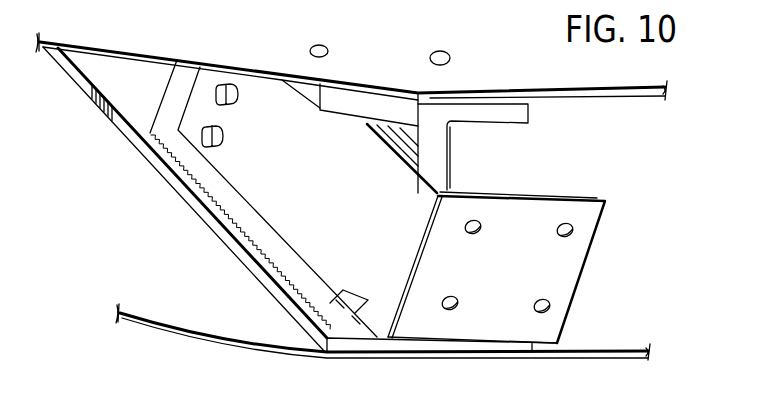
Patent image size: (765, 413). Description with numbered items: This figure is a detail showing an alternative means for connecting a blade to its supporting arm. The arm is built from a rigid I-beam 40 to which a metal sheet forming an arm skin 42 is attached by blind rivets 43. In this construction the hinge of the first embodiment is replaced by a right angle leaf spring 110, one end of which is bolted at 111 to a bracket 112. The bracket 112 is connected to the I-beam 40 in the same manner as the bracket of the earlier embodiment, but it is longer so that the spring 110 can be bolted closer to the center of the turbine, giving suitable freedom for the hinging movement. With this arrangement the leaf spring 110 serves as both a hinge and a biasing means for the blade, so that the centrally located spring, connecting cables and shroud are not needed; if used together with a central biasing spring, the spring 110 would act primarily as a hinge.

The I-beam 40 is at (528, 106).
The arm skin 42 is at (222, 35).
The blind rivets 43 is at (430, 56).
The right angle leaf spring 110 is at (528, 208).
The bolts 111 is at (238, 98).
The bracket 112 is at (222, 189).